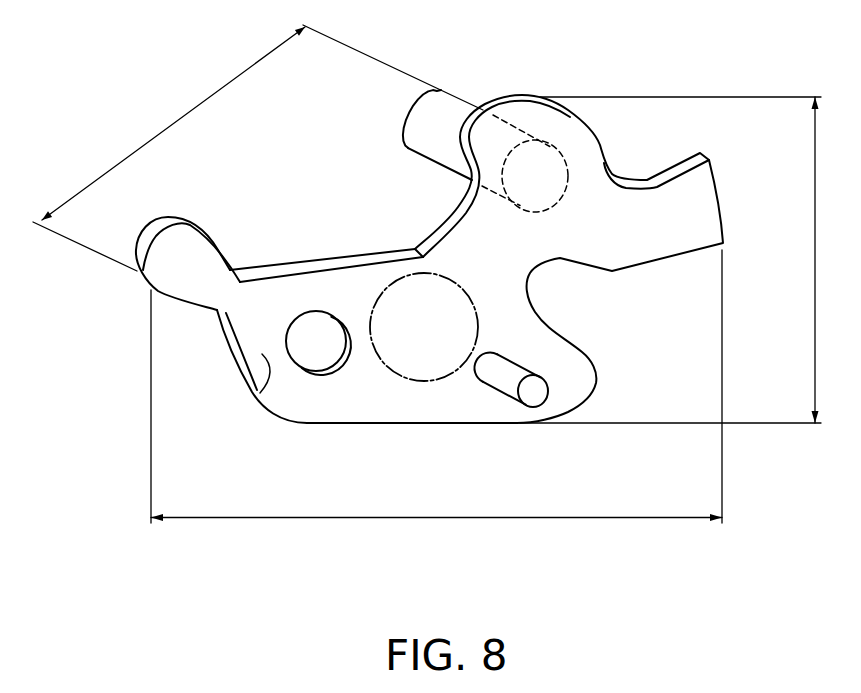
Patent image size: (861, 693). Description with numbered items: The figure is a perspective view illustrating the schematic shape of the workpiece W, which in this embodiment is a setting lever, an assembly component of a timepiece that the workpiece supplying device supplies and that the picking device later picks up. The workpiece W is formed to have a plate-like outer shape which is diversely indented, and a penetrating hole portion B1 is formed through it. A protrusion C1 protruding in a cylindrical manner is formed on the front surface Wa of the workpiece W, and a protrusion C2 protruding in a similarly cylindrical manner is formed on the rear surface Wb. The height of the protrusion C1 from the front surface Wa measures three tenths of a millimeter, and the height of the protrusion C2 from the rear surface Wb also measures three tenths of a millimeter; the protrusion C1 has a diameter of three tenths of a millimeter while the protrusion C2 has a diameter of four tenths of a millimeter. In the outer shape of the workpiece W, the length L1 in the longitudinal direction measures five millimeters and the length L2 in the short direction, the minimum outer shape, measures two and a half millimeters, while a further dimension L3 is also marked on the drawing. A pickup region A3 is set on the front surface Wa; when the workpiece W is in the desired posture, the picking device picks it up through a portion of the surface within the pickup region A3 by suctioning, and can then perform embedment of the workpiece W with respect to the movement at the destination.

The workpiece W is at (618, 347).
The front surface Wa is at (250, 391).
The rear surface Wb is at (293, 268).
The protrusion C2 is at (422, 113).
The protrusion C1 is at (500, 382).
The penetrating hole portion B1 is at (324, 373).
The pickup region A3 is at (420, 383).
The length in the longitudinal direction L1 is at (436, 402).
The length in the short direction L2 is at (686, 260).
The diagonal dimension L3 is at (258, 148).